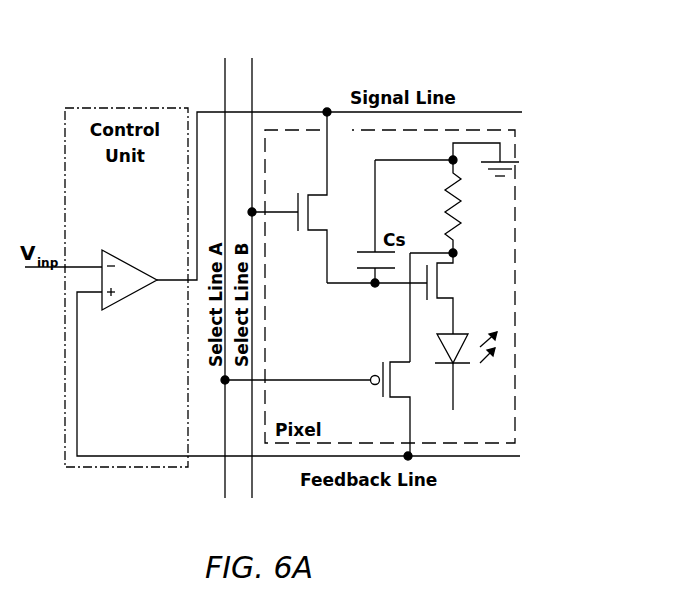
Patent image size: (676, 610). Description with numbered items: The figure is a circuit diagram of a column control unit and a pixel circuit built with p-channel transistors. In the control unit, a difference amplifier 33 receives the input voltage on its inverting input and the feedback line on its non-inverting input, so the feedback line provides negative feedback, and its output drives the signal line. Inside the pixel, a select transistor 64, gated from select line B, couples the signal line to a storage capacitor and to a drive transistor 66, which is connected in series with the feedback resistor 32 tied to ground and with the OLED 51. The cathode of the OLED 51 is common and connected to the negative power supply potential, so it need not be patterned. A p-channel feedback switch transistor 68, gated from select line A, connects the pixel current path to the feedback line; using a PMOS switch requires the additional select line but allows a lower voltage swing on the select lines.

The difference amplifier 33 is at (110, 257).
The select transistor 64 is at (301, 147).
The feedback resistor 32 is at (447, 212).
The drive transistor 66 is at (462, 282).
The feedback switch transistor 68 is at (417, 384).
The OLED 51 is at (457, 365).